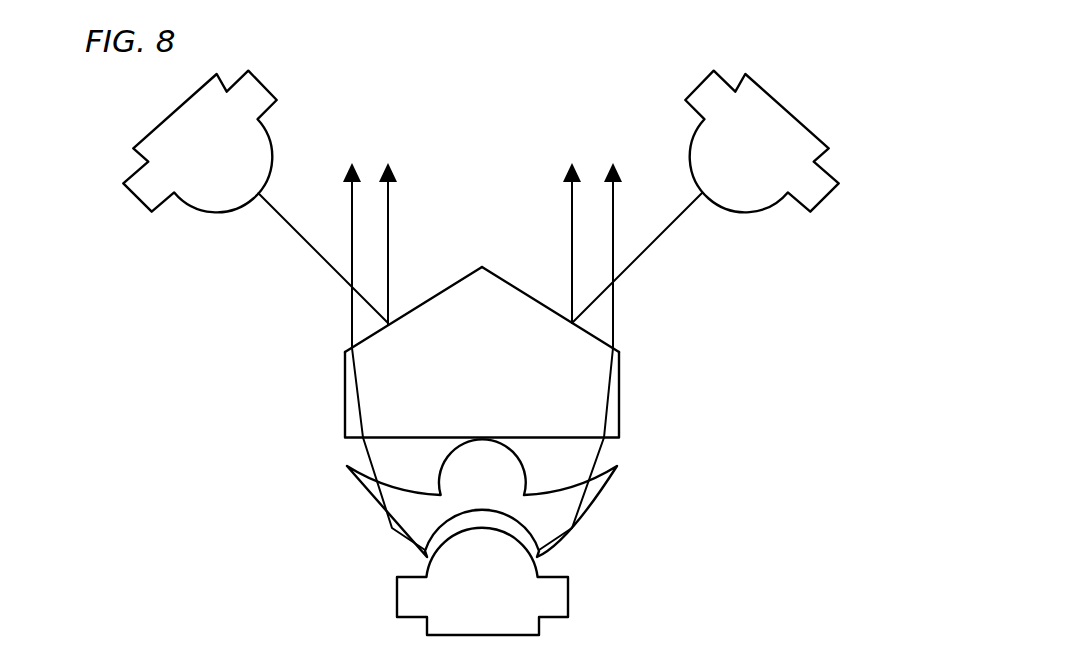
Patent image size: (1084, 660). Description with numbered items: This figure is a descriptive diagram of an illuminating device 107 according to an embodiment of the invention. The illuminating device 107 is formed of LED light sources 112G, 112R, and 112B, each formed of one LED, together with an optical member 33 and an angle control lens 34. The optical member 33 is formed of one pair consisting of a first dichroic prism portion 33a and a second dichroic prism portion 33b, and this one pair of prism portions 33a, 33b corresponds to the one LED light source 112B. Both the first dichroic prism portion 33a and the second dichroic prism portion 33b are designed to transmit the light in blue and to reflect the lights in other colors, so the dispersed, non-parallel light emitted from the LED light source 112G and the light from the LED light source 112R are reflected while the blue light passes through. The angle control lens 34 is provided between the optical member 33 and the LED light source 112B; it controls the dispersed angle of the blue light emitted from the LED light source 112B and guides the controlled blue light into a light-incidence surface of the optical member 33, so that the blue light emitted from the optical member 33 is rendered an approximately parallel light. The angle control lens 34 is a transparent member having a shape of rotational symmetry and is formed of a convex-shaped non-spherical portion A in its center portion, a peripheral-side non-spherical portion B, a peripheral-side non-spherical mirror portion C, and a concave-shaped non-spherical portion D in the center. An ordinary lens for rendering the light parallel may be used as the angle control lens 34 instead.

The illuminating device 107 is at (886, 342).
The optical member 33 is at (514, 339).
The first dichroic prism portion 33a is at (432, 297).
The second dichroic prism portion 33b is at (528, 292).
The angle control lens 34 is at (617, 467).
The LED light source 112G is at (111, 164).
The LED light source 112R is at (852, 158).
The LED light source 112B is at (609, 600).
The convex-shaped non-spherical portion A is at (455, 470).
The peripheral-side non-spherical portion B is at (558, 491).
The peripheral-side non-spherical mirror portion C is at (368, 498).
The concave-shaped non-spherical portion D is at (425, 557).